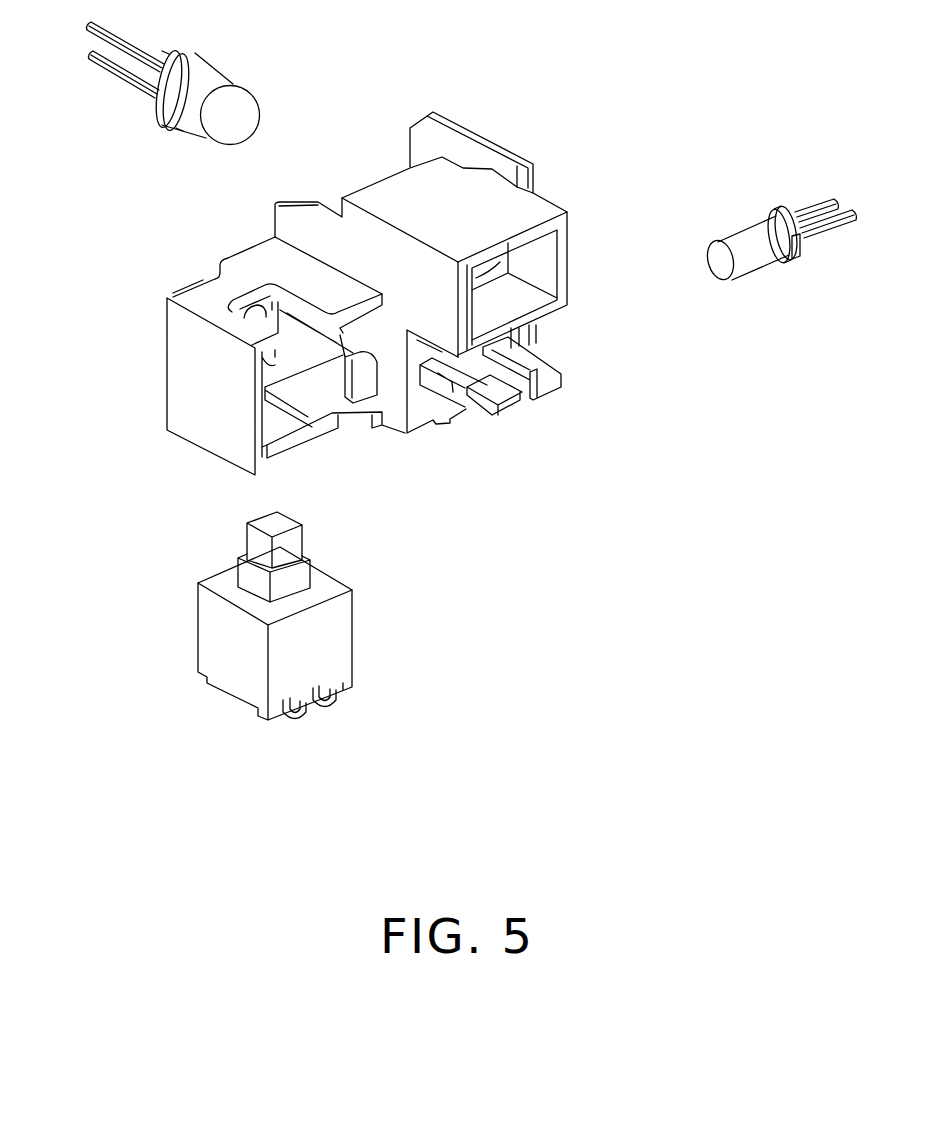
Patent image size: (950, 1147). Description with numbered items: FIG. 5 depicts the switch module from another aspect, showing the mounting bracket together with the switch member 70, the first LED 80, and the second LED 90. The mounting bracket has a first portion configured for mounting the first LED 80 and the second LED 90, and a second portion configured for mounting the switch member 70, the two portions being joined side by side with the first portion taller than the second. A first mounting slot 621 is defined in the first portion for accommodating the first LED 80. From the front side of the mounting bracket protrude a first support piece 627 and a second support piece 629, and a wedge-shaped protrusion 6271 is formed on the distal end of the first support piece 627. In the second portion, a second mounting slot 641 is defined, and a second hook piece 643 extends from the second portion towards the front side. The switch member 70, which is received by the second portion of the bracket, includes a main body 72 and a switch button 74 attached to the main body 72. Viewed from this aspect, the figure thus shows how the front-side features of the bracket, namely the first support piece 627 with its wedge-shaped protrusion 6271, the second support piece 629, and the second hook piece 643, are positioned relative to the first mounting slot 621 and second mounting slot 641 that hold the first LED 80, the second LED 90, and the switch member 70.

The first LED 80 is at (212, 82).
The second LED 90 is at (757, 240).
The first mounting slot 621 is at (500, 263).
The first support piece 627 is at (494, 416).
The wedge-shaped protrusion 6271 is at (468, 404).
The second support piece 629 is at (552, 386).
The second mounting slot 641 is at (298, 342).
The second hook piece 643 is at (358, 387).
The switch member 70 is at (314, 608).
The main body 72 is at (338, 643).
The switch button 74 is at (265, 523).